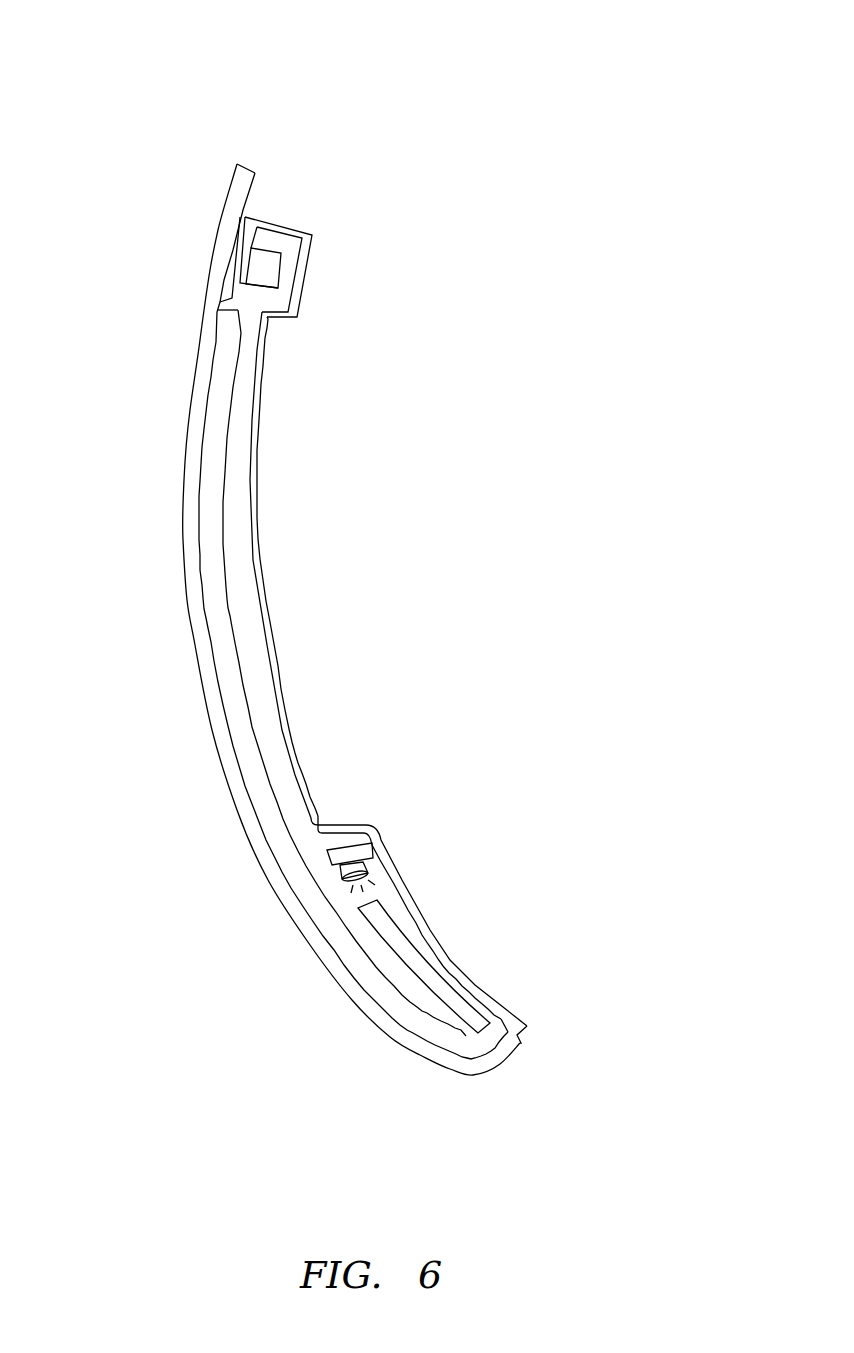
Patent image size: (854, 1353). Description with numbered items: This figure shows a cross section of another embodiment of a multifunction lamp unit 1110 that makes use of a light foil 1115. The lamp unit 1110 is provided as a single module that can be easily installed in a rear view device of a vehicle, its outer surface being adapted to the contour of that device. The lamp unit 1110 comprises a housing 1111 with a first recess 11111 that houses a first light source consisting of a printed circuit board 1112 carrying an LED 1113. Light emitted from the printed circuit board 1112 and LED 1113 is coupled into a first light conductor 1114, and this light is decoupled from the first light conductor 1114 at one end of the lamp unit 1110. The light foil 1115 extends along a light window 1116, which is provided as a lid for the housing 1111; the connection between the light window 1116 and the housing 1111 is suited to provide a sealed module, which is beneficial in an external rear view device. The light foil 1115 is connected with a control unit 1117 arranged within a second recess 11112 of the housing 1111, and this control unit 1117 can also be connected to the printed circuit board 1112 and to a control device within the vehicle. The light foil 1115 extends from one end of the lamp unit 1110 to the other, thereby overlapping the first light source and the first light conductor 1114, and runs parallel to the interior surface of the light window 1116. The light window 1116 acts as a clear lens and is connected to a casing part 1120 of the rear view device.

The multifunction lamp unit 1110 is at (308, 72).
The casing part 1120 is at (232, 180).
The second recess 11112 is at (264, 220).
The control unit 1117 is at (270, 263).
The light window 1116 is at (188, 440).
The housing 1111 is at (260, 570).
The light foil 1115 is at (249, 712).
The first recess 11111 is at (343, 823).
The printed circuit board 1112 is at (378, 842).
The LED 1113 is at (363, 864).
The first light conductor 1114 is at (487, 1013).